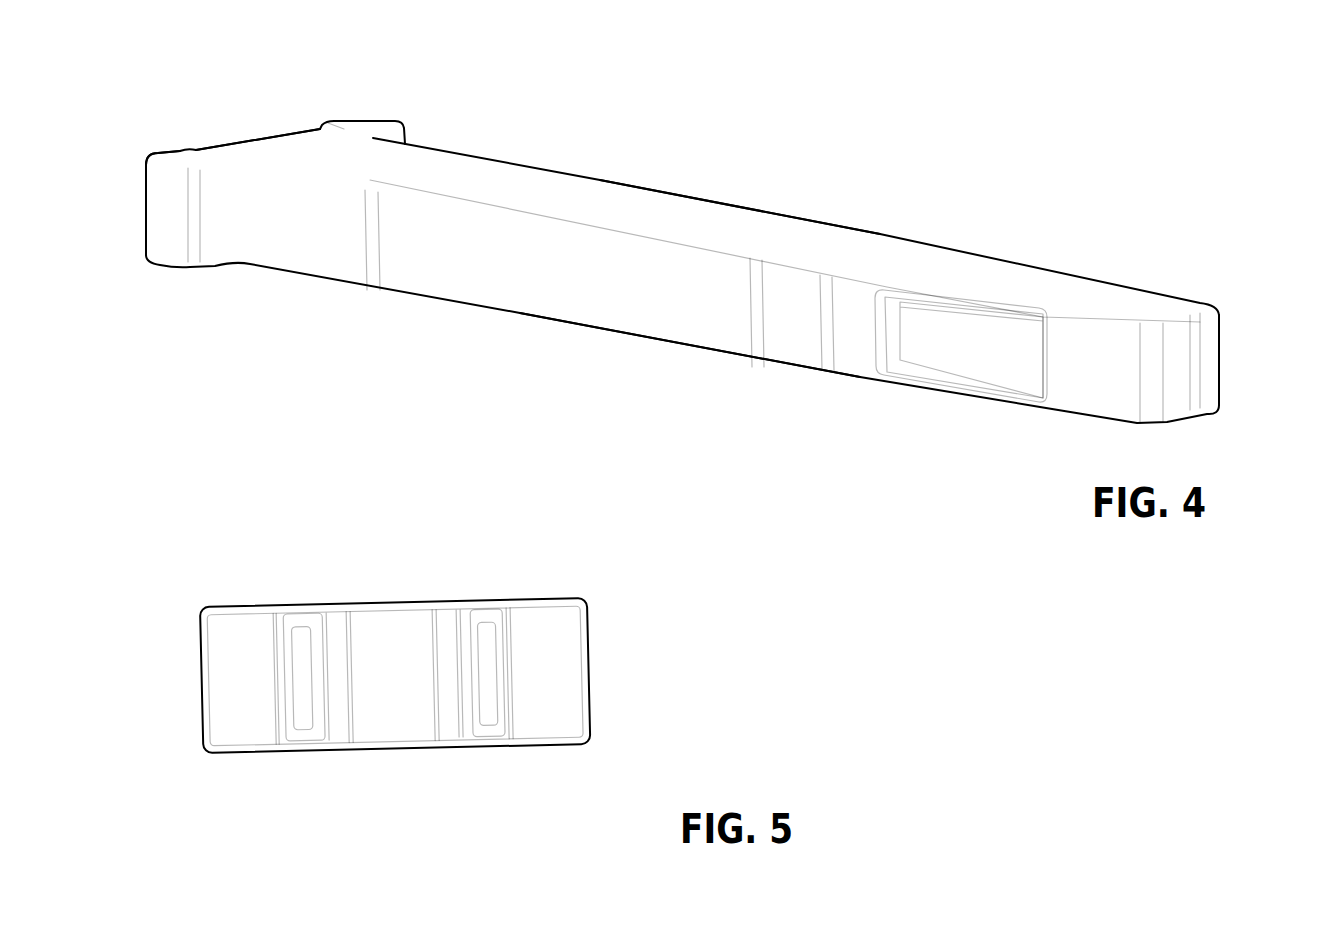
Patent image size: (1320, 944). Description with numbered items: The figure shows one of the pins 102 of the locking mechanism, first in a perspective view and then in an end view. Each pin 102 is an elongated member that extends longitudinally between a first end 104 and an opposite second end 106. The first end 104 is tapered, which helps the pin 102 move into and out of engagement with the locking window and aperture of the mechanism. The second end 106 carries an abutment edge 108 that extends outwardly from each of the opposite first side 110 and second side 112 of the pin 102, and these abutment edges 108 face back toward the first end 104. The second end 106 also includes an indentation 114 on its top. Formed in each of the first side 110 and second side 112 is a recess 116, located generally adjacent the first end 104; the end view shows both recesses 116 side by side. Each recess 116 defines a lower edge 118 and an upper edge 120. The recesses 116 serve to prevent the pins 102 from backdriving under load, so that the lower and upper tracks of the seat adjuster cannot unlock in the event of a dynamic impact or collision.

In FIG. 4, the pin 102 is at (637, 200).
In FIG. 5, the pin 102 is at (378, 600).
In FIG. 4, the first end 104 is at (1200, 365).
In FIG. 5, the first end 104 is at (385, 720).
In FIG. 4, the second end 106 is at (343, 122).
In FIG. 4, the abutment edge 108 is at (405, 140).
In FIG. 5, the abutment edge 108 is at (225, 740).
In FIG. 4, the first side 110 is at (675, 317).
In FIG. 5, the first side 110 is at (277, 695).
In FIG. 4, the second side 112 is at (800, 220).
In FIG. 5, the second side 112 is at (510, 690).
In FIG. 4, the indentation 114 is at (273, 137).
In FIG. 4, the recess 116 is at (990, 368).
In FIG. 5, the recess 116 is at (288, 677).
In FIG. 4, the lower edge 118 is at (917, 378).
In FIG. 5, the lower edge 118 is at (302, 737).
In FIG. 4, the upper edge 120 is at (960, 303).
In FIG. 5, the upper edge 120 is at (297, 623).